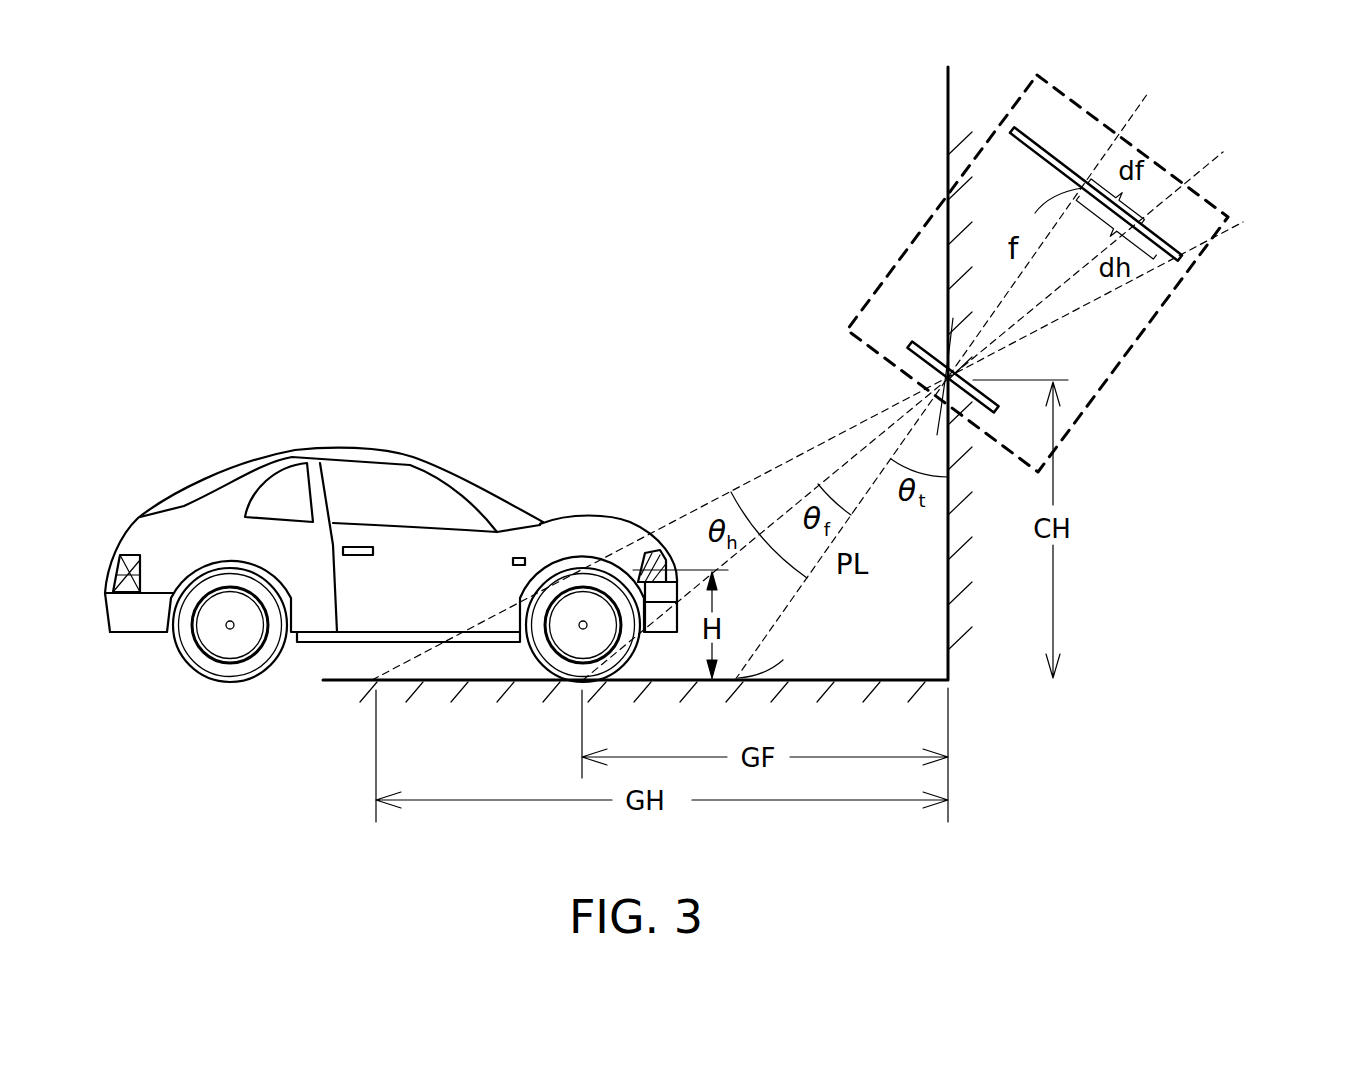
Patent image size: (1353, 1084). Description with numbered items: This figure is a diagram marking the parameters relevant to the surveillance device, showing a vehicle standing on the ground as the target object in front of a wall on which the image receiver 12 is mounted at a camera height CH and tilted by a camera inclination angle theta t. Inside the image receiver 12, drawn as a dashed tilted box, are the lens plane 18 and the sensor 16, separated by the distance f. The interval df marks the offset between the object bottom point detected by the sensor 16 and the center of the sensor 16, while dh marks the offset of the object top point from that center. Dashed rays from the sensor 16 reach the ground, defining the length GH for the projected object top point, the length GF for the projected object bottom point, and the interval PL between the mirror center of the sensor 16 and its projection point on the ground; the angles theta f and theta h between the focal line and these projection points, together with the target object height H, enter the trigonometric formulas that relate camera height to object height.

The image receiver 12 is at (1230, 207).
The sensor 16 is at (912, 357).
The lens plane 18 is at (1170, 258).